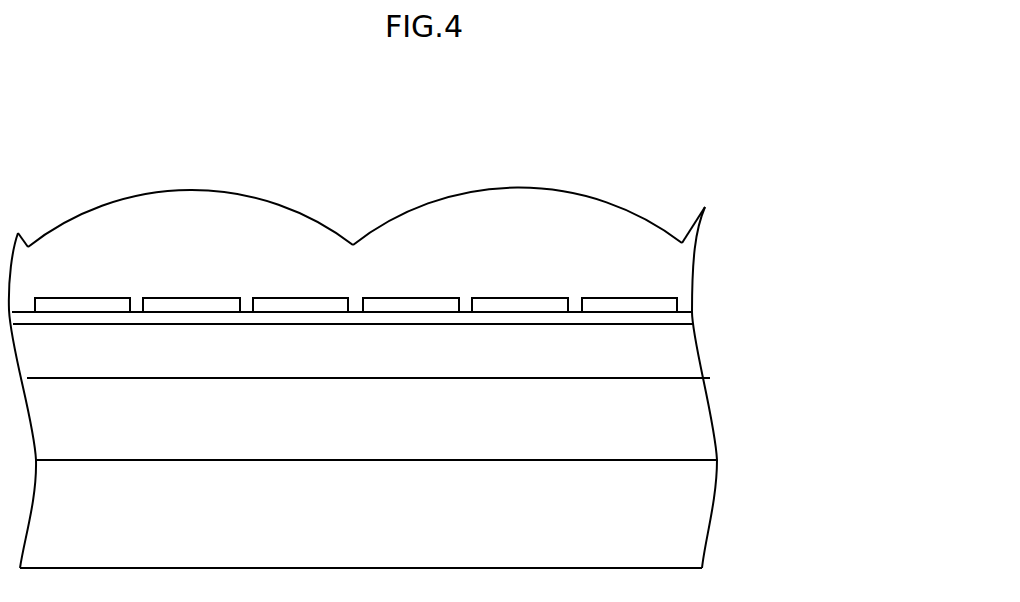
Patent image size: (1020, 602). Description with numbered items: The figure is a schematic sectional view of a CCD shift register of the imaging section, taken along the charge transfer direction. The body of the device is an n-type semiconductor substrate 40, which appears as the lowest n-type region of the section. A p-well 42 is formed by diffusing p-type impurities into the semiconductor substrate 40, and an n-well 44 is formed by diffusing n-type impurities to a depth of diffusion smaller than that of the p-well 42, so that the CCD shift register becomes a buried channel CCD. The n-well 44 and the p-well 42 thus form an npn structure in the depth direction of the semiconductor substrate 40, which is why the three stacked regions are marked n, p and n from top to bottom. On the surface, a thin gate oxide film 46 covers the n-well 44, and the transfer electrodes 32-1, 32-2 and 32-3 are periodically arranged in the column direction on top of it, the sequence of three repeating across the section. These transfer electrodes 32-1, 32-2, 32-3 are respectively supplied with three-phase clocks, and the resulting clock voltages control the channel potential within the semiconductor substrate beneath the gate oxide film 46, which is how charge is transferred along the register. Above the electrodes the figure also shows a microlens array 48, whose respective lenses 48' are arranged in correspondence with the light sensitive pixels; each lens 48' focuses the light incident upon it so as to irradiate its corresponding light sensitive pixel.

The n-type semiconductor substrate 40 is at (820, 312).
The p-well 42 is at (693, 418).
The n-well 44 is at (680, 350).
The gate oxide film 46 is at (692, 317).
The transfer electrode 32-1 is at (82, 304).
The transfer electrode 32-2 is at (192, 304).
The transfer electrode 32-3 is at (303, 304).
The microlens array 48 is at (361, 175).
The lens 48' is at (355, 175).